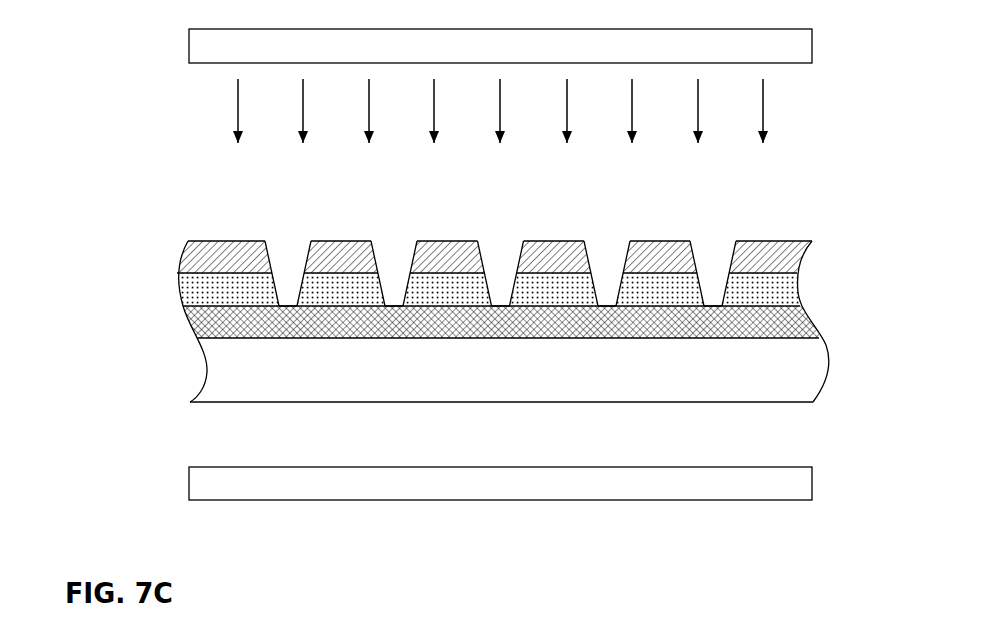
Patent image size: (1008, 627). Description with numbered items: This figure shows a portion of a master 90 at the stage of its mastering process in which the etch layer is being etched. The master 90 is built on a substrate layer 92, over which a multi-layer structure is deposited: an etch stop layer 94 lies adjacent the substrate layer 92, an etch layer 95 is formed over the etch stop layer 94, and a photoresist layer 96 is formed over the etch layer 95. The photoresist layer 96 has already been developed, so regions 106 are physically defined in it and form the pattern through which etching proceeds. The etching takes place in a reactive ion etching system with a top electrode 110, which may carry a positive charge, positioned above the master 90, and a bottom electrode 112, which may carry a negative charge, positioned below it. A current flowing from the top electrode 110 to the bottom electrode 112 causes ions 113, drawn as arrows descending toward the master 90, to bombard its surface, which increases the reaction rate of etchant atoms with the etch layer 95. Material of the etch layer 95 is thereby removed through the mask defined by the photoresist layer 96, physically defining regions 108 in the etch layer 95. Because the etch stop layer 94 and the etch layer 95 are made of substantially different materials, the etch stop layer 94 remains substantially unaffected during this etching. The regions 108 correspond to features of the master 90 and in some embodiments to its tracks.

The master 90 is at (157, 337).
The substrate layer 92 is at (795, 387).
The etch stop layer 94 is at (820, 338).
The etch layer 95 is at (788, 293).
The photoresist layer 96 is at (762, 262).
The regions 106 is at (288, 263).
The regions 108 is at (713, 307).
The top electrode 110 is at (188, 50).
The bottom electrode 112 is at (188, 483).
The ions 113 is at (203, 127).